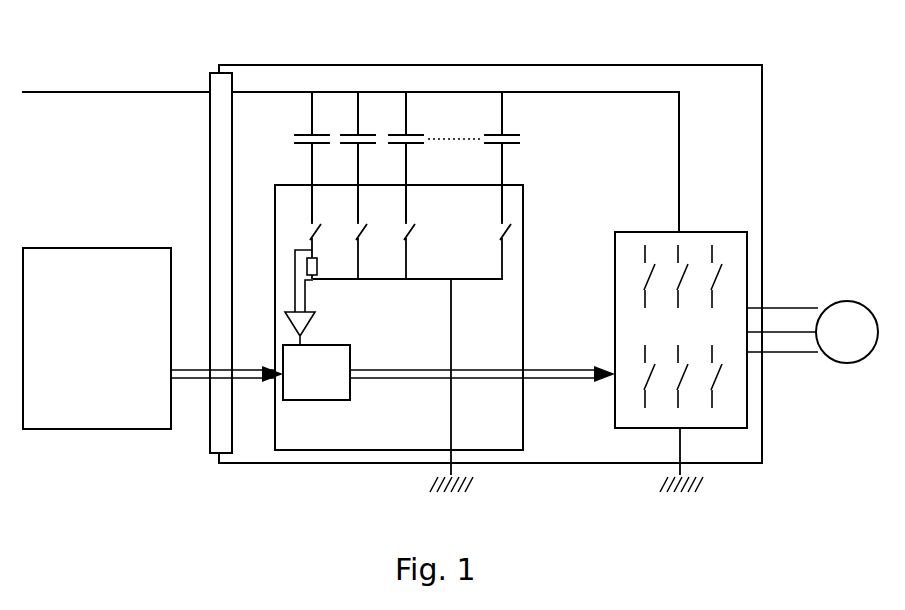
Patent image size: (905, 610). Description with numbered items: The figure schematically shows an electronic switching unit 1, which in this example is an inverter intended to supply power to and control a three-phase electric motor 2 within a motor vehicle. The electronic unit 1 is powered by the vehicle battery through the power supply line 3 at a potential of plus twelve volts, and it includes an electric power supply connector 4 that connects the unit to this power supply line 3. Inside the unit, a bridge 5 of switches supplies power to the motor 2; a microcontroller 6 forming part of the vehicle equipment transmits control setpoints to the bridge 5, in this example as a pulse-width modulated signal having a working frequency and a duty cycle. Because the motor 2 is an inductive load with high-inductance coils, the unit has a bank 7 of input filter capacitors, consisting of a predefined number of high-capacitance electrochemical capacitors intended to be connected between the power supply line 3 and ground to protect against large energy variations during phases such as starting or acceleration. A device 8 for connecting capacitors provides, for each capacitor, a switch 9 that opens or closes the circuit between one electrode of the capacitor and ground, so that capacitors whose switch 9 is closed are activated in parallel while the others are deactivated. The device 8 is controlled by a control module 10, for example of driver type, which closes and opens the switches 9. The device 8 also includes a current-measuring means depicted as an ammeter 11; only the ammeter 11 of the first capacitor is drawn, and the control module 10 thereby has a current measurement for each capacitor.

The electronic switching unit 1 is at (565, 415).
The three-phase electric motor 2 is at (851, 312).
The power supply line 3 is at (123, 92).
The electric power supply connector 4 is at (214, 225).
The bridge of switches 5 is at (660, 248).
The microcontroller 6 is at (84, 278).
The bank of input filter capacitors 7 is at (553, 137).
The device for connecting capacitors 8 is at (535, 232).
The switch 9 is at (318, 233).
The control module 10 is at (320, 385).
The ammeter 11 is at (320, 297).